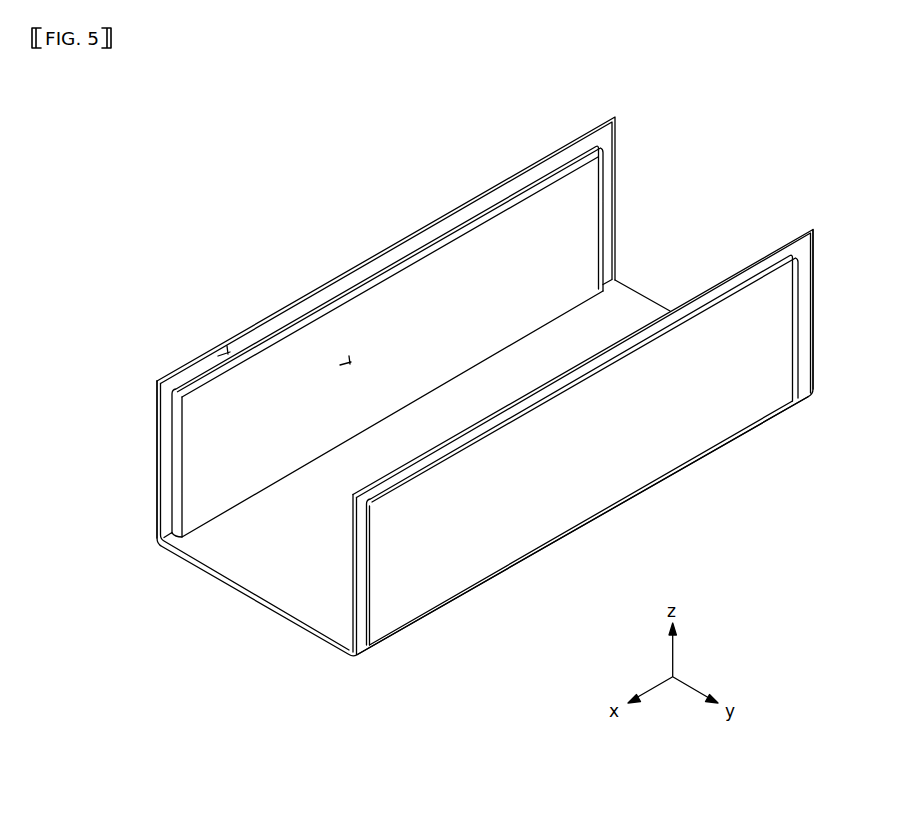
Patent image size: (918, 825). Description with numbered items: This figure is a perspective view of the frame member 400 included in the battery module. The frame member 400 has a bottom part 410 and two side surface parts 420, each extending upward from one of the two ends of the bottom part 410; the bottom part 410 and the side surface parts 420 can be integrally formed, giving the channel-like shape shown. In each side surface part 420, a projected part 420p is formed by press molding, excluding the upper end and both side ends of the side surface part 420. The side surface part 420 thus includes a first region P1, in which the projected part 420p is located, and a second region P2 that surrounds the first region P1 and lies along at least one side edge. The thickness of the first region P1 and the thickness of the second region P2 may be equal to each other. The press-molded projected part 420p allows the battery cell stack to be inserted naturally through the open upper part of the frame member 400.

The frame member 400 is at (325, 94).
The bottom part 410 is at (633, 318).
The side surface part 420 is at (608, 192).
The projected part 420p is at (442, 292).
The first region P1 is at (347, 360).
The second region P2 is at (225, 352).